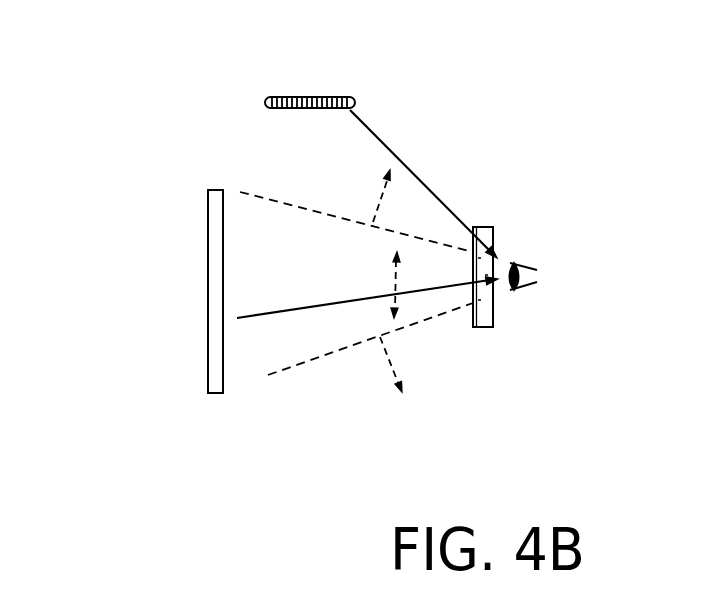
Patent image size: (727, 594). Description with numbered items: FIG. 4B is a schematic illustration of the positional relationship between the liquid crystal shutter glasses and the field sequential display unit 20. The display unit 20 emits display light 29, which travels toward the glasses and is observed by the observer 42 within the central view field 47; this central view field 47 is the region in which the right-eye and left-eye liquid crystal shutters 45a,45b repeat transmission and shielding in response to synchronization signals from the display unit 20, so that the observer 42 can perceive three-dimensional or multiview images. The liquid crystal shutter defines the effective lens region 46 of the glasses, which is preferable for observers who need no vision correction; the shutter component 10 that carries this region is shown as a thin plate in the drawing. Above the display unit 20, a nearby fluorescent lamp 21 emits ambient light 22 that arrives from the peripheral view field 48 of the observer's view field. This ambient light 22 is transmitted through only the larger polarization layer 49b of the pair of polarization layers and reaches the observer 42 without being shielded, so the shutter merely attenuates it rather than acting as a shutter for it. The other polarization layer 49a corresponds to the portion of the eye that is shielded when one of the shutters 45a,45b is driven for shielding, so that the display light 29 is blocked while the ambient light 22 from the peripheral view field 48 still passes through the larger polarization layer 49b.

The field sequential display unit 20 is at (217, 395).
The fluorescent lamp 21 is at (300, 110).
The ambient light 22 is at (408, 148).
The display light 29 is at (270, 312).
The optical plate / light guide 10 is at (490, 318).
The effective lens region 46 is at (490, 228).
The observer 42 is at (533, 263).
The polarization layer 49a is at (497, 288).
The larger polarization layer 49b is at (472, 320).
The right-eye liquid crystal shutter and left-eye liquid crystal shutter 45a,45b is at (486, 328).
The central view field 47 is at (388, 277).
The peripheral view field 48 is at (372, 202).